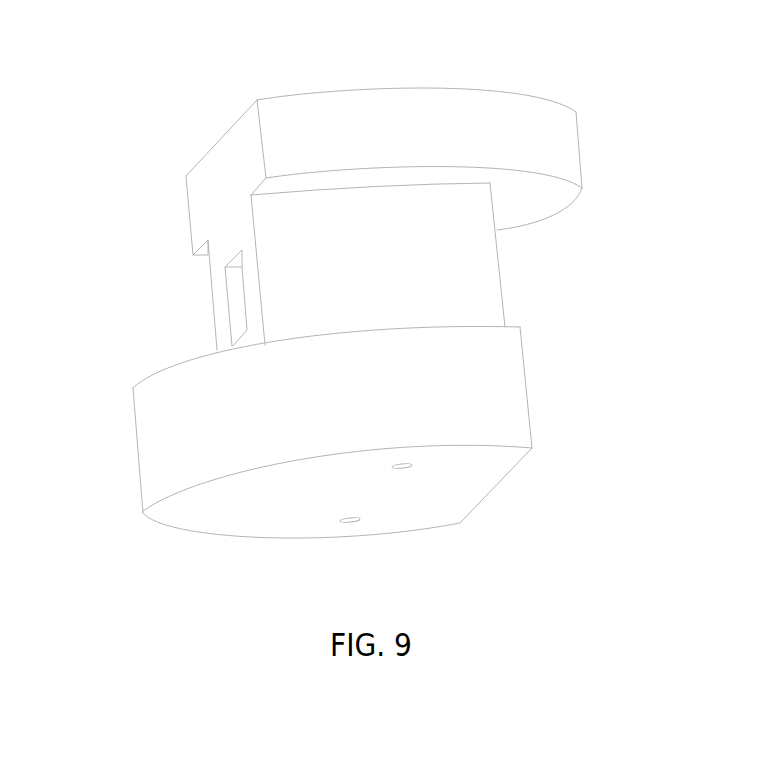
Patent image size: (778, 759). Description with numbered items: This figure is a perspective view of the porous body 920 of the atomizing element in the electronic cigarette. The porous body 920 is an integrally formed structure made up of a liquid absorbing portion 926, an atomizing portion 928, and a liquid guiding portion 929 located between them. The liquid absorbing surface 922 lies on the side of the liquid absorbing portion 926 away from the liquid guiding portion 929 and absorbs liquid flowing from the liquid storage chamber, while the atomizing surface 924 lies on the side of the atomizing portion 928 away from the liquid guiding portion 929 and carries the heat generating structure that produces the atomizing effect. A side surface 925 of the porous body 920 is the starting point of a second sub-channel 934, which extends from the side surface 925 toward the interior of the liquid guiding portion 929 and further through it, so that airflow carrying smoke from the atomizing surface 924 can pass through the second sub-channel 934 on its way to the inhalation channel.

The porous body 920 is at (90, 76).
The liquid absorbing surface 922 is at (362, 88).
The atomizing surface 924 is at (393, 502).
The side surface 925 is at (220, 287).
The liquid absorbing portion 926 is at (527, 137).
The atomizing portion 928 is at (488, 408).
The liquid guiding portion 929 is at (475, 282).
The second sub-channel 934 is at (238, 305).